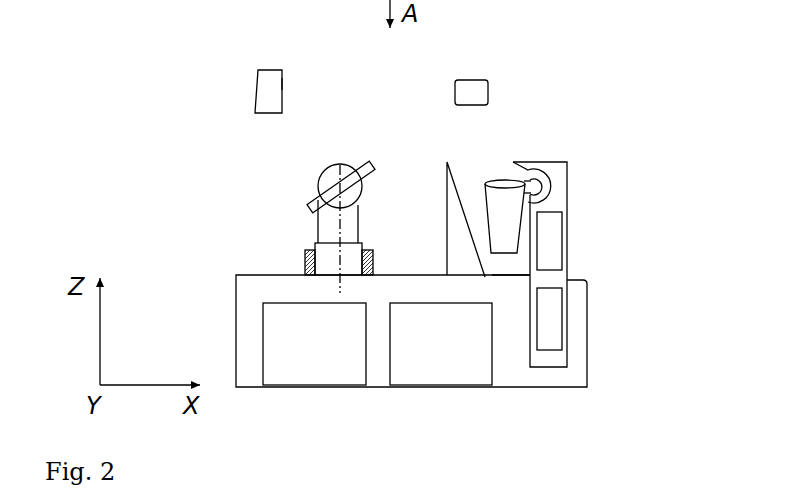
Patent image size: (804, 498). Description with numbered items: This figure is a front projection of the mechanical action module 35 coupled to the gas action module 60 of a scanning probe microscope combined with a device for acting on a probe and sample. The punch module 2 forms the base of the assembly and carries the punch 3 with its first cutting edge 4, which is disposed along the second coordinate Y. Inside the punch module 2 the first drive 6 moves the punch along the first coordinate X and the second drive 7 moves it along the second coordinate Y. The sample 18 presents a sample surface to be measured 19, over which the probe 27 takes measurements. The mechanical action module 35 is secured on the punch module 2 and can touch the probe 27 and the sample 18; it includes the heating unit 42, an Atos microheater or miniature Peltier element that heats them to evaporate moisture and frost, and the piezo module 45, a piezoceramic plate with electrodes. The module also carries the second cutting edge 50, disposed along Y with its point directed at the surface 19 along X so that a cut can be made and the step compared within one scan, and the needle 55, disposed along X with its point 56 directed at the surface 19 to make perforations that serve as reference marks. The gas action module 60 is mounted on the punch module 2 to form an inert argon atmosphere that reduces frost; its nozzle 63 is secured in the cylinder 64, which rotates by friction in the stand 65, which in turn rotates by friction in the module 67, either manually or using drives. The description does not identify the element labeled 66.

The punch module 2 is at (236, 305).
The punch 3 is at (467, 255).
The first cutting edge 4 is at (449, 160).
The first drive 6 is at (332, 325).
The second drive 7 is at (422, 325).
The sample 18 is at (265, 108).
The sample surface to be measured 19 is at (328, 64).
The probe 27 is at (463, 90).
The mechanical action module 35 is at (553, 192).
The heating unit 42 is at (550, 252).
The piezo module 45 is at (550, 308).
The second cutting edge 50 is at (514, 162).
The needle 55 is at (510, 253).
The needle point 56 is at (513, 226).
The gas action module 60 is at (323, 180).
The nozzle 63 is at (310, 208).
The cylinder 64 is at (331, 168).
The stand 65 is at (350, 185).
The gripper column 66 is at (362, 215).
The module 67 is at (305, 248).